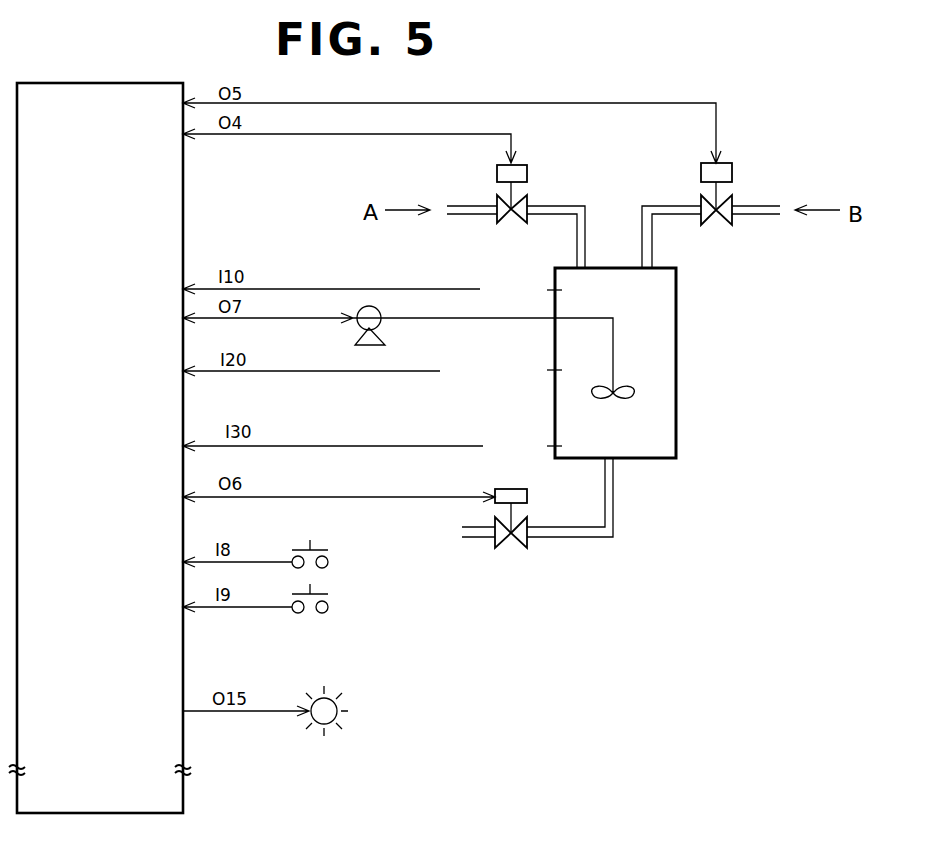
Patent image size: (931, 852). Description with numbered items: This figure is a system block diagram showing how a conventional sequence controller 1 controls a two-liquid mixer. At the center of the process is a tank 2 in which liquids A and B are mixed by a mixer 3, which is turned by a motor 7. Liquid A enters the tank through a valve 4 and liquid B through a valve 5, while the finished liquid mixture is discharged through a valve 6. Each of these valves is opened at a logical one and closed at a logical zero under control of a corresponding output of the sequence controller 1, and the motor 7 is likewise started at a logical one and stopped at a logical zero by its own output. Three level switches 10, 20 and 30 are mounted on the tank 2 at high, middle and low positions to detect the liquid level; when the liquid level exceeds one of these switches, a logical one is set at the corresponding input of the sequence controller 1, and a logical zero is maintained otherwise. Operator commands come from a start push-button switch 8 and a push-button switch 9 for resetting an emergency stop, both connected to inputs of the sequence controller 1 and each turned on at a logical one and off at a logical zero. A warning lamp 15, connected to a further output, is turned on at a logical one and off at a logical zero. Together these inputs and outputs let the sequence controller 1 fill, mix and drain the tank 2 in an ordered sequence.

The sequence controller 1 is at (183, 222).
The tank 2 is at (677, 312).
The mixer 3 is at (634, 391).
The valve for the liquid A 4 is at (528, 172).
The valve for the liquid B 5 is at (733, 170).
The valve for discharging the liquid mixture 6 is at (530, 497).
The motor 7 is at (388, 335).
The start push-button switch 8 is at (335, 559).
The push-button switch for resetting an emergency stop 9 is at (335, 605).
The level switch 10 is at (548, 286).
The warning lamp 15 is at (340, 700).
The level switch 20 is at (548, 368).
The level switch 30 is at (548, 442).